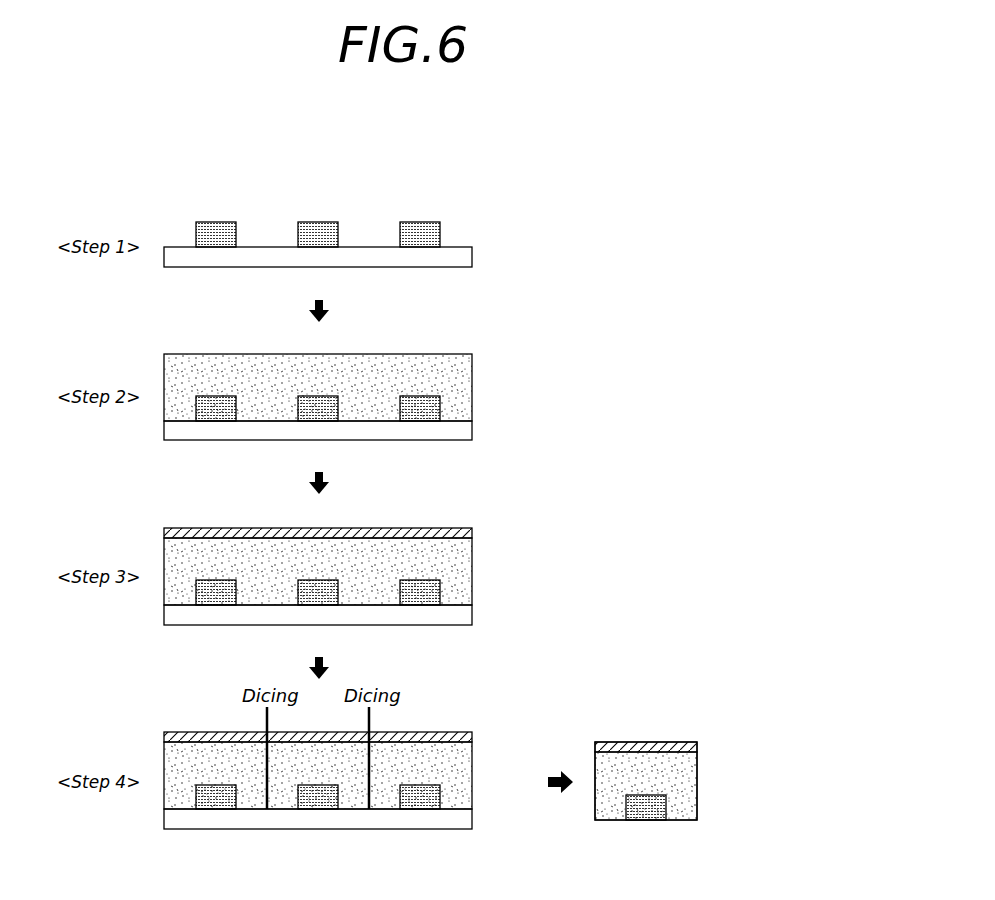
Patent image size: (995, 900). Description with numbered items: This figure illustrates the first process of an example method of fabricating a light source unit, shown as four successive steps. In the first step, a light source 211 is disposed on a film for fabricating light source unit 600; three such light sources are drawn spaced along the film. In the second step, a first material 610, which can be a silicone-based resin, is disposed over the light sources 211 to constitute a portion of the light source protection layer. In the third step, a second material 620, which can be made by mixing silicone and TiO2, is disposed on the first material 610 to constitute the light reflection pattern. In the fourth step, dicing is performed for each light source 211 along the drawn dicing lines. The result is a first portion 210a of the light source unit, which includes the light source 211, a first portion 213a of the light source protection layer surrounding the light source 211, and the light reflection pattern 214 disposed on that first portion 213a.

The light source 211 is at (212, 230).
The film for fabricating light source unit 600 is at (465, 257).
The first material 610 is at (465, 384).
The second material 620 is at (465, 534).
The first portion of the light source unit 210a is at (678, 723).
The light reflection pattern 214 is at (690, 747).
The first portion of the light source protection layer 213a is at (690, 785).